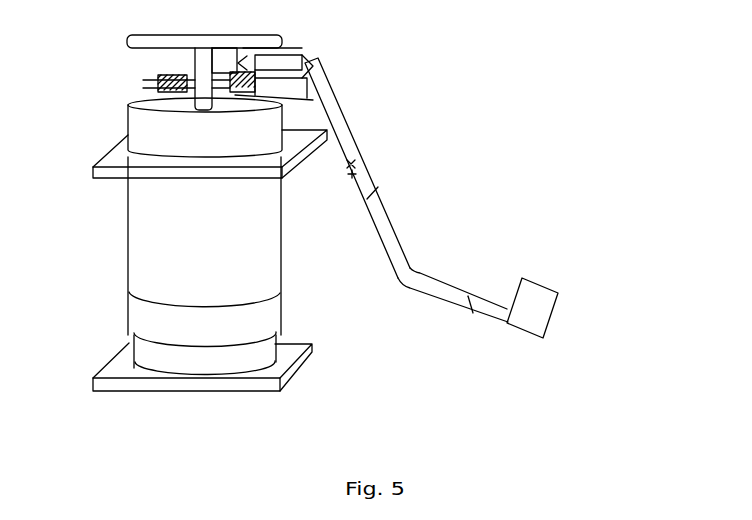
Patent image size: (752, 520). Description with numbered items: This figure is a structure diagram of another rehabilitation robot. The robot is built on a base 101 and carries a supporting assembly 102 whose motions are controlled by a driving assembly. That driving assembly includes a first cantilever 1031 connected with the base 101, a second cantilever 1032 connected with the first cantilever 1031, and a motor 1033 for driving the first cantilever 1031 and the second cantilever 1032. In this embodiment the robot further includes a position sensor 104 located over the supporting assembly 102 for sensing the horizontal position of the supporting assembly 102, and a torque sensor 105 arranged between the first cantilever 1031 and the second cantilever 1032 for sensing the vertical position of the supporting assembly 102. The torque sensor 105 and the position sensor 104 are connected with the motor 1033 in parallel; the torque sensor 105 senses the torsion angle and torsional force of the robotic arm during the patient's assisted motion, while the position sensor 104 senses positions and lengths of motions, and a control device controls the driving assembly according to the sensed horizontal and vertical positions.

The base 101 is at (157, 52).
The supporting assembly 102 is at (444, 322).
The first cantilever 1031 is at (282, 57).
The second cantilever 1032 is at (377, 186).
The motor 1033 is at (318, 104).
The position sensor 104 is at (533, 287).
The torque sensor 105 is at (316, 65).